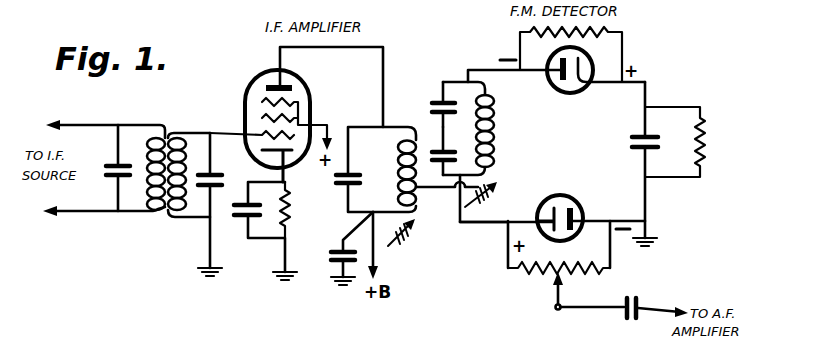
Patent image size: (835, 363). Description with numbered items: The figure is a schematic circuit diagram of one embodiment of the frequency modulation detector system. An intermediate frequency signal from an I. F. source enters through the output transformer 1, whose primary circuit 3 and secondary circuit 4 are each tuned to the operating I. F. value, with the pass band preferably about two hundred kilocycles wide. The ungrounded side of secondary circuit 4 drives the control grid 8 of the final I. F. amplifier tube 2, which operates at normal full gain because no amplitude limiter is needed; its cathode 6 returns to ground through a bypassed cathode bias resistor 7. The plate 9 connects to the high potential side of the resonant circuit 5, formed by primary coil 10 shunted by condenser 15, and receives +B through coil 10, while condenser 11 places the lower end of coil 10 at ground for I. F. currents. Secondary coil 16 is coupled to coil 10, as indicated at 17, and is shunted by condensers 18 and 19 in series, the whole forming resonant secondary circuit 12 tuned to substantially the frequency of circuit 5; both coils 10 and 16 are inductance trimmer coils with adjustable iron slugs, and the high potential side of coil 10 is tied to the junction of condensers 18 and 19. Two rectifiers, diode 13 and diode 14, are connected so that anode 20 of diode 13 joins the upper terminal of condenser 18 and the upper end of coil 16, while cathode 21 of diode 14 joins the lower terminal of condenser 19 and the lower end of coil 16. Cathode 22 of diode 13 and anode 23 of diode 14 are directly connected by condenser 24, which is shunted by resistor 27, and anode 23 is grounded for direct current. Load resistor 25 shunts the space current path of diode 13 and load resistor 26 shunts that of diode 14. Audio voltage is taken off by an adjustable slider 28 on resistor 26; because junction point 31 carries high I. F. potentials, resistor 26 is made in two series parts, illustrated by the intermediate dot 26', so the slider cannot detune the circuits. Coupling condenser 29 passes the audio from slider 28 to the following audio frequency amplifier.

The output transformer 1 is at (172, 128).
The I. F. amplifier tube 2 is at (306, 88).
The primary circuit 3 is at (135, 127).
The secondary circuit 4 is at (201, 133).
The resonant circuit 5 is at (406, 128).
The cathode 6 is at (290, 170).
The cathode bias resistor 7 is at (292, 212).
The control grid 8 is at (260, 134).
The plate 9 is at (270, 80).
The primary coil 10 is at (432, 107).
The condenser 11 is at (340, 250).
The resonant secondary circuit 12 is at (497, 112).
The diode 13 is at (572, 92).
The diode 14 is at (565, 196).
The condenser 15 is at (350, 174).
The secondary coil 16 is at (498, 150).
The coupling 17 is at (450, 187).
The condenser 18 is at (466, 80).
The condenser 19 is at (455, 150).
The anode 20 is at (548, 73).
The cathode 21 is at (538, 216).
The cathode 22 is at (592, 88).
The anode 23 is at (587, 215).
The condenser 24 is at (632, 142).
The load resistor 25 is at (628, 42).
The load resistor 26 is at (548, 274).
The intermediate dot 26' is at (543, 292).
The resistor 27 is at (704, 140).
The slider 28 is at (561, 288).
The condenser 29 is at (634, 297).
The junction point 31 is at (504, 226).